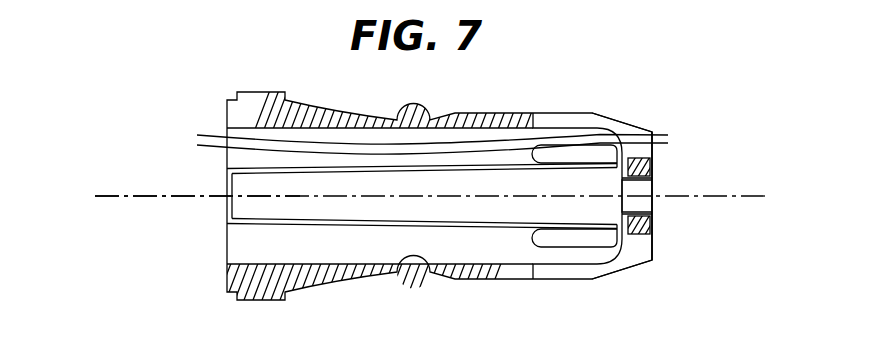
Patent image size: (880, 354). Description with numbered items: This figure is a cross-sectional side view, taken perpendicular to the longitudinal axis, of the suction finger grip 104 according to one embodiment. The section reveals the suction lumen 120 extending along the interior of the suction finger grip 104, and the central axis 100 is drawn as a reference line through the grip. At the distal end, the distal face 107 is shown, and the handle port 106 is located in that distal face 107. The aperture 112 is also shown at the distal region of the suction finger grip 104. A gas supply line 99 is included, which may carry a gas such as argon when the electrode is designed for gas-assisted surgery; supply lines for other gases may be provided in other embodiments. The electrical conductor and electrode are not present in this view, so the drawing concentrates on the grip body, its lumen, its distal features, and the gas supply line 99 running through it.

The gas supply line 99 is at (337, 144).
The central axis 100 is at (137, 200).
The suction finger grip 104 is at (218, 64).
The handle port 106 is at (636, 189).
The distal face 107 is at (655, 242).
The aperture 112 is at (647, 292).
The suction lumen 120 is at (274, 195).